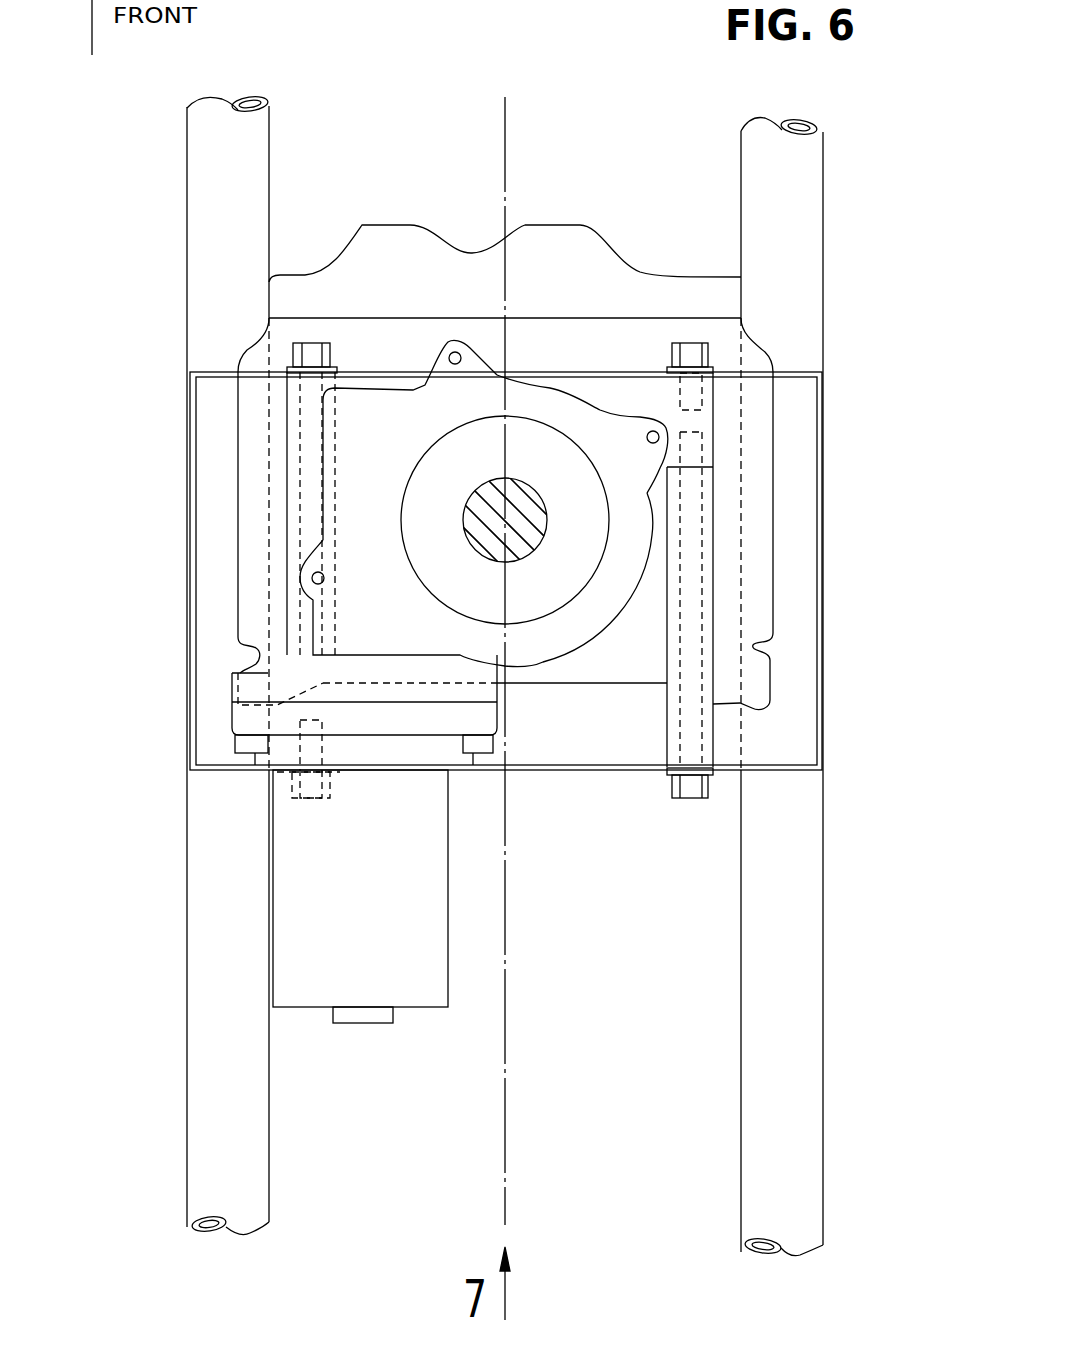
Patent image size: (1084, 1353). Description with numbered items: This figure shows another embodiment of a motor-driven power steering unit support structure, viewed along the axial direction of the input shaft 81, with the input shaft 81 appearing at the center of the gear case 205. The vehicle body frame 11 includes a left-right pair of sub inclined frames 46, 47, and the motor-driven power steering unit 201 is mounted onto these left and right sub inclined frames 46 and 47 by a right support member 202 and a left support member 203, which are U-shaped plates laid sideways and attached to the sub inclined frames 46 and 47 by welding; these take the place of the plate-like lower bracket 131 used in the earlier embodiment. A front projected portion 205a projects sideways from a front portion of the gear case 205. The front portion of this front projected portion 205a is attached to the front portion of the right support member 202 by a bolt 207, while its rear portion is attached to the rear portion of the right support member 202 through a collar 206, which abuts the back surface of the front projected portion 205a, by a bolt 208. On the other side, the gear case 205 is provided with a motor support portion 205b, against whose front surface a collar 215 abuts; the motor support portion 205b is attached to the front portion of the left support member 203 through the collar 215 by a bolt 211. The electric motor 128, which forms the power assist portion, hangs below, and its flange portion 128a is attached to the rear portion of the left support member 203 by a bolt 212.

The vehicle body frame 11 is at (176, 227).
The sub inclined frame 46 is at (187, 1061).
The sub inclined frame 47 is at (800, 1059).
The motor-driven power steering unit 201 is at (371, 376).
The right support member 202 is at (800, 372).
The left support member 203 is at (213, 370).
The lower bracket 131 is at (765, 590).
The gear case 205 is at (385, 417).
The front projected portion 205a is at (605, 385).
The motor support portion 205b is at (487, 692).
The input shaft 81 is at (547, 516).
The collar 215 is at (287, 523).
The bolt 211 is at (293, 353).
The bolt 207 is at (690, 347).
The collar 206 is at (713, 672).
The bolt 208 is at (713, 787).
The bolt 212 is at (290, 785).
The electric motor 128 is at (418, 992).
The flange portion 128a is at (430, 743).